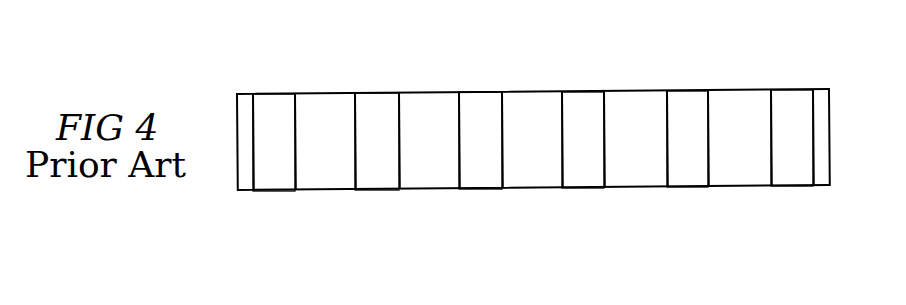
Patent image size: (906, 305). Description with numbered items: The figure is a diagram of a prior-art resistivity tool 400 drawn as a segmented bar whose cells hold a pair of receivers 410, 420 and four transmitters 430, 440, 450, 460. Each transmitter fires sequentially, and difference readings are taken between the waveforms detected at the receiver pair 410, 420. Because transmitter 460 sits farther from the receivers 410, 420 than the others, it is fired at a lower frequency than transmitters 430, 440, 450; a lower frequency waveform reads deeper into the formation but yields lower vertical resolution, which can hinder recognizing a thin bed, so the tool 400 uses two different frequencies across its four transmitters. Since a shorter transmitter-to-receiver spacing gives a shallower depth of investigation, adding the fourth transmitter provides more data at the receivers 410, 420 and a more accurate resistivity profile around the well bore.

The resistivity tool 400 is at (590, 80).
The receiver 410 is at (265, 191).
The receiver 420 is at (368, 190).
The transmitter 430 is at (474, 189).
The transmitter 440 is at (579, 188).
The transmitter 450 is at (687, 187).
The transmitter 460 is at (788, 186).